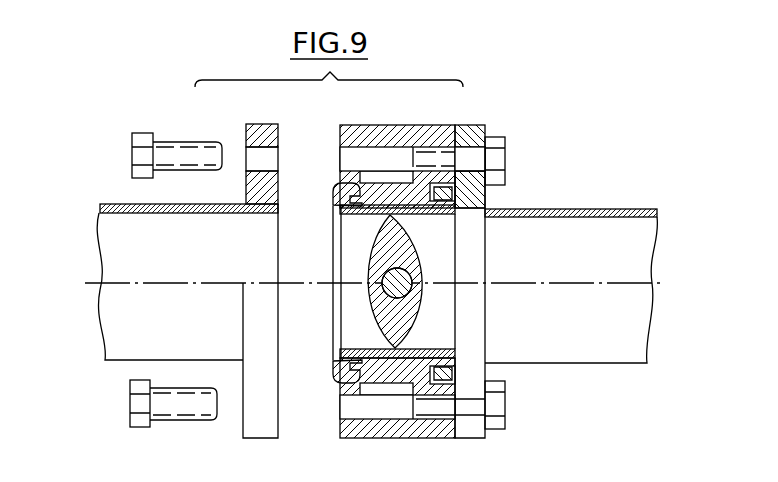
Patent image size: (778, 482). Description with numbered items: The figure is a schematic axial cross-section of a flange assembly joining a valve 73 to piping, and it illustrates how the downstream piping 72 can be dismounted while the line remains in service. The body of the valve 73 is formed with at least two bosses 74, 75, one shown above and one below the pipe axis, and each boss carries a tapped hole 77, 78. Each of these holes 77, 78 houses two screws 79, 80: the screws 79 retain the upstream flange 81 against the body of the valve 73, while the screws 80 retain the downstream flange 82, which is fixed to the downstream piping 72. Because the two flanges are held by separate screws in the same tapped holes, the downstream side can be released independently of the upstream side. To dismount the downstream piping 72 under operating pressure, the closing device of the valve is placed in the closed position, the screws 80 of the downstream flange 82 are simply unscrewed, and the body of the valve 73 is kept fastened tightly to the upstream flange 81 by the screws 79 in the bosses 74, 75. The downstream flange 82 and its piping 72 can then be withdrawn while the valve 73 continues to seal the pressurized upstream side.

The downstream piping 72 is at (95, 197).
The valve 73 is at (378, 98).
The boss 74 is at (405, 438).
The boss 75 is at (430, 134).
The tapped hole 77 is at (384, 152).
The tapped hole 78 is at (356, 438).
The screw 79 is at (505, 143).
The screw 80 is at (141, 132).
The upstream flange 81 is at (472, 195).
The downstream flange 82 is at (268, 192).